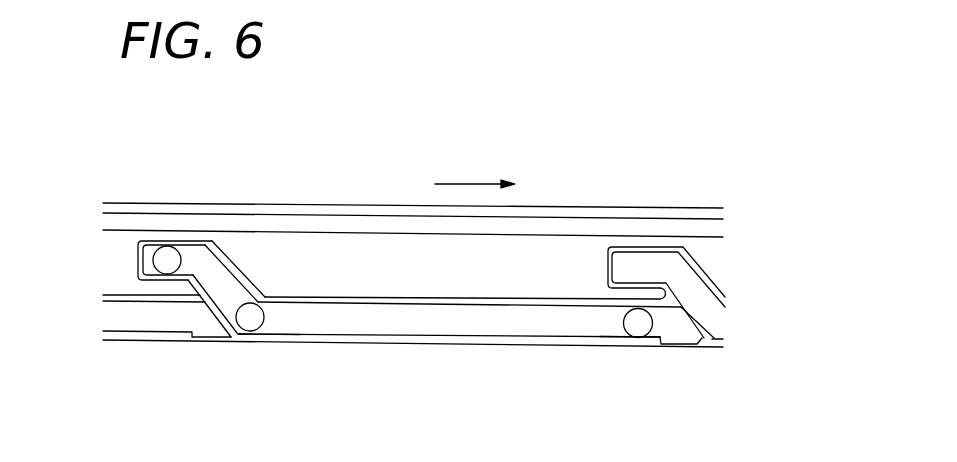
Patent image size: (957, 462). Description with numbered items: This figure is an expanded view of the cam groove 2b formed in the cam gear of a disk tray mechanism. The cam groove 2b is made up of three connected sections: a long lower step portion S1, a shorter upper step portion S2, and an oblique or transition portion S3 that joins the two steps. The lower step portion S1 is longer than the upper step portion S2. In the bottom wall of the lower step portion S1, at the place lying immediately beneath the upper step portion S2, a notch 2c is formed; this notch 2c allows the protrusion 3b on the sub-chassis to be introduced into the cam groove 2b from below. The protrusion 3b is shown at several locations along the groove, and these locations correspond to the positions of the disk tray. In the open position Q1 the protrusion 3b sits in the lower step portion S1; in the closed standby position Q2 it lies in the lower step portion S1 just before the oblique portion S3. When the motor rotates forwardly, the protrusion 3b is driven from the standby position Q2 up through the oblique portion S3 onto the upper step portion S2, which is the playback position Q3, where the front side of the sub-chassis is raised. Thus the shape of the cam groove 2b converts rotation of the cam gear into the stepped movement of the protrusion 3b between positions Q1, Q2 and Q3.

The protrusion 3b is at (166, 260).
The upper step portion S2 is at (208, 257).
The oblique or transition portion S3 is at (236, 291).
The lower step portion S1 is at (503, 333).
The cam groove 2b is at (367, 323).
The notch 2c is at (690, 338).
The open position Q1 is at (625, 356).
The standby position Q2 is at (260, 350).
The playback position Q3 is at (162, 293).